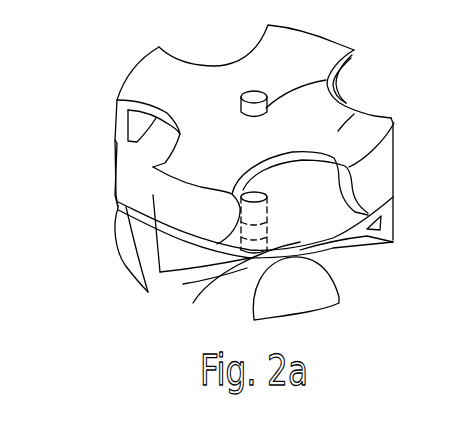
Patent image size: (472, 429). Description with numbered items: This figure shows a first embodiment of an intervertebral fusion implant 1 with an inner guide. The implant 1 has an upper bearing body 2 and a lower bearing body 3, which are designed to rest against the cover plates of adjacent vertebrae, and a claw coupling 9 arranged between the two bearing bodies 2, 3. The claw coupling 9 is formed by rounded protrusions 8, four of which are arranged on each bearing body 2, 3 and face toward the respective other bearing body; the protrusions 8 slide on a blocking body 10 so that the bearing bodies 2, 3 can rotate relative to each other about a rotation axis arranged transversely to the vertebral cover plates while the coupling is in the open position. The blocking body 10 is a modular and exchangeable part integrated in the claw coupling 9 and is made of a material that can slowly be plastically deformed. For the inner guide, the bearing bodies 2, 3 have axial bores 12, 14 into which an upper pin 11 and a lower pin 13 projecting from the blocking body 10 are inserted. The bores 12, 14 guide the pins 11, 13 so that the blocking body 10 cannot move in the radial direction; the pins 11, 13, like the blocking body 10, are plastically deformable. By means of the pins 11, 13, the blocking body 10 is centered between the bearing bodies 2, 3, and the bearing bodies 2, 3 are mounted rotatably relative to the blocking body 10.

The intervertebral fusion implant 1 is at (107, 53).
The upper bearing body 2 is at (365, 114).
The lower bearing body 3 is at (183, 284).
The protrusions 8 is at (303, 295).
The claw coupling 9 is at (150, 235).
The blocking body 10 is at (117, 192).
The upper pin 11 is at (253, 92).
The axial bore 12 is at (325, 84).
The lower pin 13 is at (257, 262).
The axial bore 14 is at (247, 270).